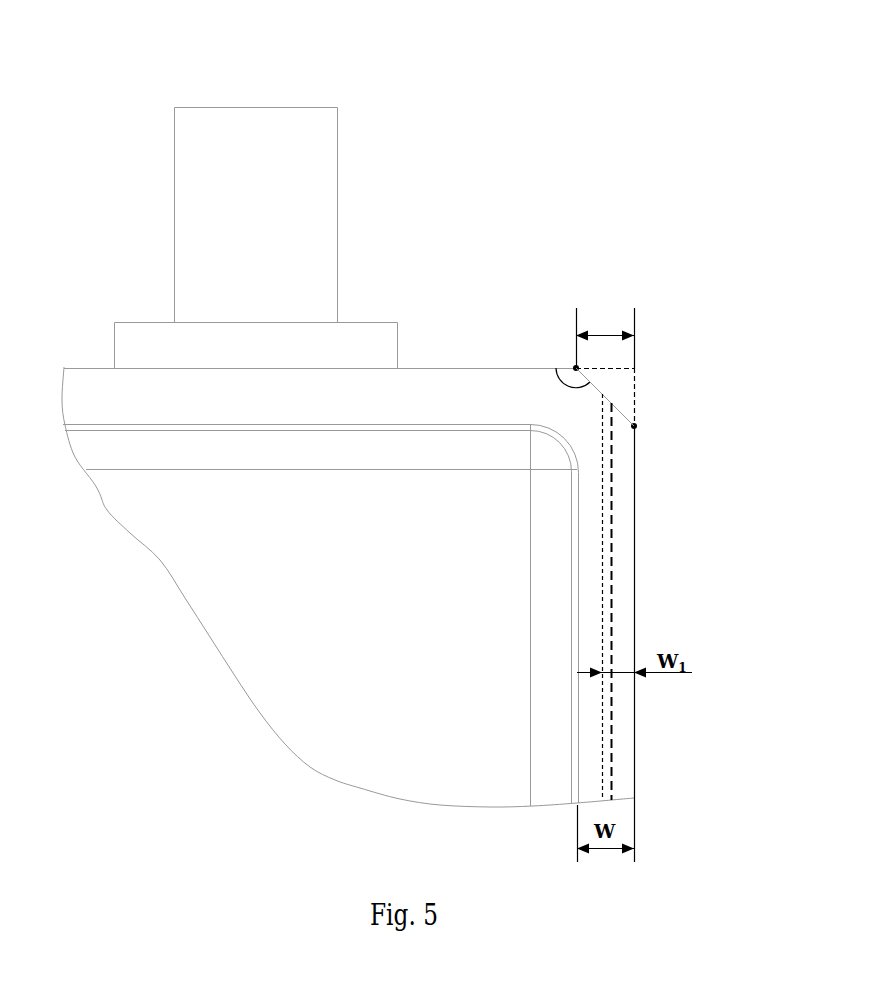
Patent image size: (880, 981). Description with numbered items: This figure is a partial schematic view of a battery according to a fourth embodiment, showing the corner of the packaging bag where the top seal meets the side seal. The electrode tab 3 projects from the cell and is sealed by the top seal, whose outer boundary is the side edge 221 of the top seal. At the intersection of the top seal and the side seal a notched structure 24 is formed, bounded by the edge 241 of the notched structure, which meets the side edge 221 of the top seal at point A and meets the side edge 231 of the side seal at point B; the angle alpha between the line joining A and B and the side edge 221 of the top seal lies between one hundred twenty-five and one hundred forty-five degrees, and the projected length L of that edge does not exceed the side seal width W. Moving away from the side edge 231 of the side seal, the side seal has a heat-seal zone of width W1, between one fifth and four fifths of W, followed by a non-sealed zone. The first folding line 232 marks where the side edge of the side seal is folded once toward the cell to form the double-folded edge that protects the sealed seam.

The electrode tab 3 is at (242, 130).
The side edge of the top seal 221 is at (482, 368).
The notched structure 24 is at (625, 387).
The edge of the notched structure 241 is at (610, 403).
The side edge of the side seal 231 is at (634, 552).
The first folding line 232 is at (612, 730).